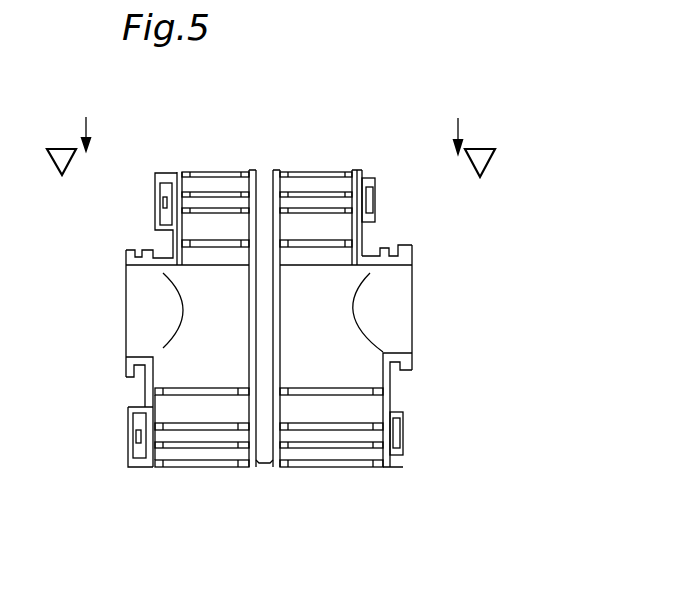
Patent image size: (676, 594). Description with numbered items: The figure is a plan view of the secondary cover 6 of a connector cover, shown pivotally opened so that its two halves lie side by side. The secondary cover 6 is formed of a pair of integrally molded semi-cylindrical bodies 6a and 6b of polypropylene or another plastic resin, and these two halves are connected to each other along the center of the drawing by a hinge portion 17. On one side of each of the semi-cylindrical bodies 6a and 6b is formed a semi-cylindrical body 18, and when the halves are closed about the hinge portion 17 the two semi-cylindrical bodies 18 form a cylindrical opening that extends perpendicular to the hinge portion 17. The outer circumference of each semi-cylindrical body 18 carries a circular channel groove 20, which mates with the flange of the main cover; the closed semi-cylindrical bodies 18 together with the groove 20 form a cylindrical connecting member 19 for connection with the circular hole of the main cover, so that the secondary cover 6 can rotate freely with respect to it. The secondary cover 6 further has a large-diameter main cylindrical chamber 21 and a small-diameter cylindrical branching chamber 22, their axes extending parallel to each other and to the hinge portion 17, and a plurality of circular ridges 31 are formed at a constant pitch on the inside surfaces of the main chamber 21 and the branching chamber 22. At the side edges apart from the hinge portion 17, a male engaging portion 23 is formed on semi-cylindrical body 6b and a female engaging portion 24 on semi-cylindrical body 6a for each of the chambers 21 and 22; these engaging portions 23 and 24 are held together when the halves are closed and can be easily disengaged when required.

The secondary cover 6 is at (258, 474).
The semi-cylindrical body 6a is at (195, 323).
The semi-cylindrical body 6b is at (345, 325).
The hinge portion 17 is at (263, 464).
The semi-cylindrical body 18 is at (128, 278).
The cylindrical connecting member 19 is at (112, 355).
The circular channel groove 20 is at (140, 252).
The main cylindrical chamber 21 is at (370, 410).
The branching chamber 22 is at (345, 233).
The male engaging portion 23 is at (377, 205).
The female engaging portion 24 is at (155, 200).
The circular ridges 31 is at (243, 171).